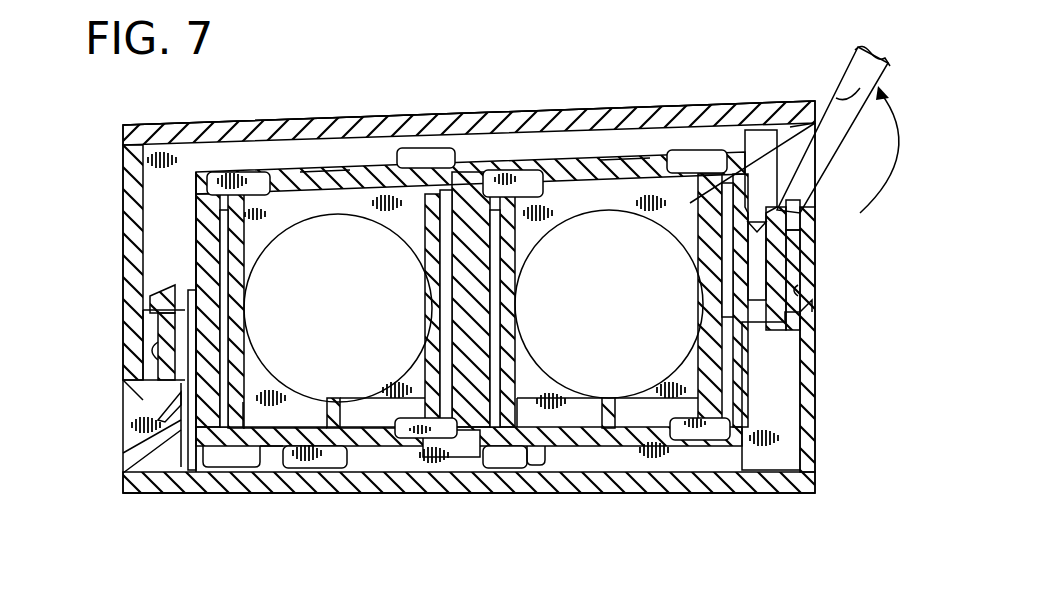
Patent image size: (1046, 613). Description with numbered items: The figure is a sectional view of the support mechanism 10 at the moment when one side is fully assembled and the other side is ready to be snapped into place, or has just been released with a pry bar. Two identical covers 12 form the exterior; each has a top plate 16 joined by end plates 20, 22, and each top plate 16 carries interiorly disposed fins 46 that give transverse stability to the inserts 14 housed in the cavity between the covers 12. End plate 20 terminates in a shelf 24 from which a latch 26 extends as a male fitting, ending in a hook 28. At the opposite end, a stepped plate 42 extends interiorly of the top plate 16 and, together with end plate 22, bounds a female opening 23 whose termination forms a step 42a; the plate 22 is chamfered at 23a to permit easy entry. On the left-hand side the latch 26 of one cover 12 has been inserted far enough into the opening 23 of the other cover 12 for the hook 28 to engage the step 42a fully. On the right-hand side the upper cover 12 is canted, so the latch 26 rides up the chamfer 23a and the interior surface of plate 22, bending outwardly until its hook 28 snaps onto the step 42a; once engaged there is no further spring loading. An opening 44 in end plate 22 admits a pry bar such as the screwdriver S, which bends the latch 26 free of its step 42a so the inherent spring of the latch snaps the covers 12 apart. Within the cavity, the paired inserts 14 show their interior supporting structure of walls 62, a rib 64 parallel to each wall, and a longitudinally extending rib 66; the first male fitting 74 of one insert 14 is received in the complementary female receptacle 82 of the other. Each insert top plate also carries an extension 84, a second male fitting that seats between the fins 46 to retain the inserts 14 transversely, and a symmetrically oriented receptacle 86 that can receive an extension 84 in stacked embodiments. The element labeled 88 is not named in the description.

The support mechanism 10 is at (106, 104).
The cover 12 is at (445, 110).
The insert 14 is at (556, 155).
The top plate 16 is at (273, 120).
The end plate 20 is at (124, 248).
The end plate 22 is at (124, 323).
The female opening 23 is at (146, 352).
The chamfer 23a is at (147, 284).
The shelf 24 is at (175, 288).
The latch 26 is at (147, 398).
The hook 28 is at (150, 423).
The stepped plate 42 is at (170, 470).
The step 42a is at (160, 411).
The opening 44 is at (133, 447).
The fins 46 is at (618, 455).
The interior wall 62 is at (258, 345).
The rib 64 is at (340, 392).
The longitudinally extending rib 66 is at (283, 387).
The first male fitting 74 is at (700, 328).
The female receptacle 82 is at (697, 286).
The extension 84 is at (387, 165).
The receptacle 86 is at (235, 175).
The shoulder 88 is at (324, 172).
The screwdriver S is at (840, 97).